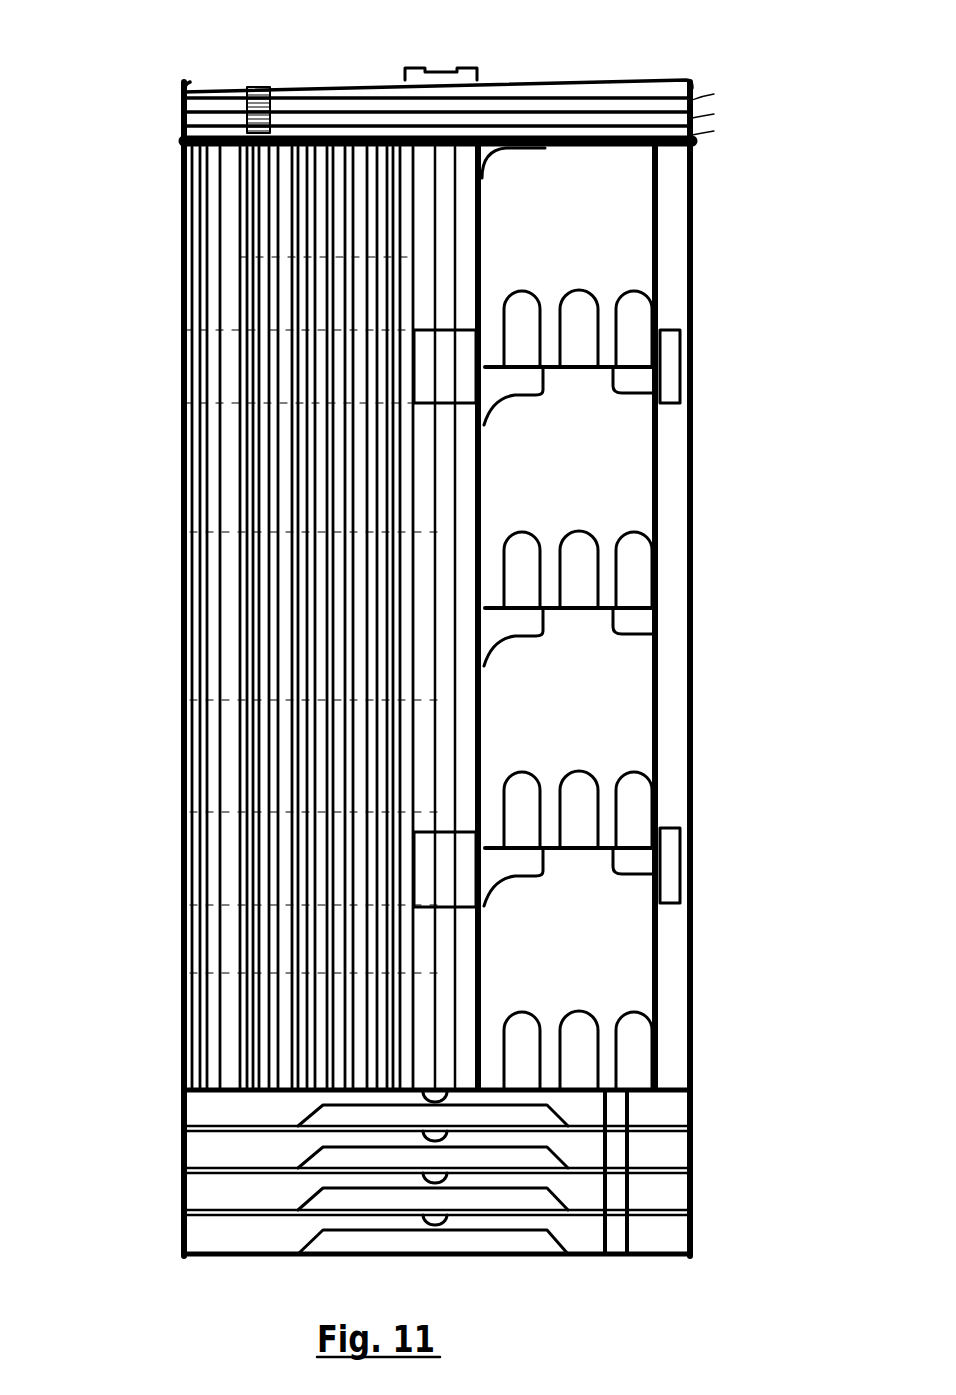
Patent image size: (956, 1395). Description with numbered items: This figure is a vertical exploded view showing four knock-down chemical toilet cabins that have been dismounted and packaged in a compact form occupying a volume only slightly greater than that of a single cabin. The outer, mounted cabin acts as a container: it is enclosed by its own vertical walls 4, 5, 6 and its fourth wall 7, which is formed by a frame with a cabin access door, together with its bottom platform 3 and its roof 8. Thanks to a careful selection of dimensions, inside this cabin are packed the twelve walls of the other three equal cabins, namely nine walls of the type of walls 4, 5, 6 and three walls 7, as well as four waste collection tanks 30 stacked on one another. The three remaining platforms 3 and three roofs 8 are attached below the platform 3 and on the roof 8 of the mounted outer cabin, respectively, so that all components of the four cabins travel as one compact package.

The bottom platform 3 is at (738, 1231).
The vertical wall 4 is at (180, 620).
The vertical wall 5 is at (328, 172).
The vertical wall 6 is at (690, 775).
The fourth wall 7 is at (467, 178).
The roof 8 is at (695, 135).
The waste collection tank 30 is at (640, 230).